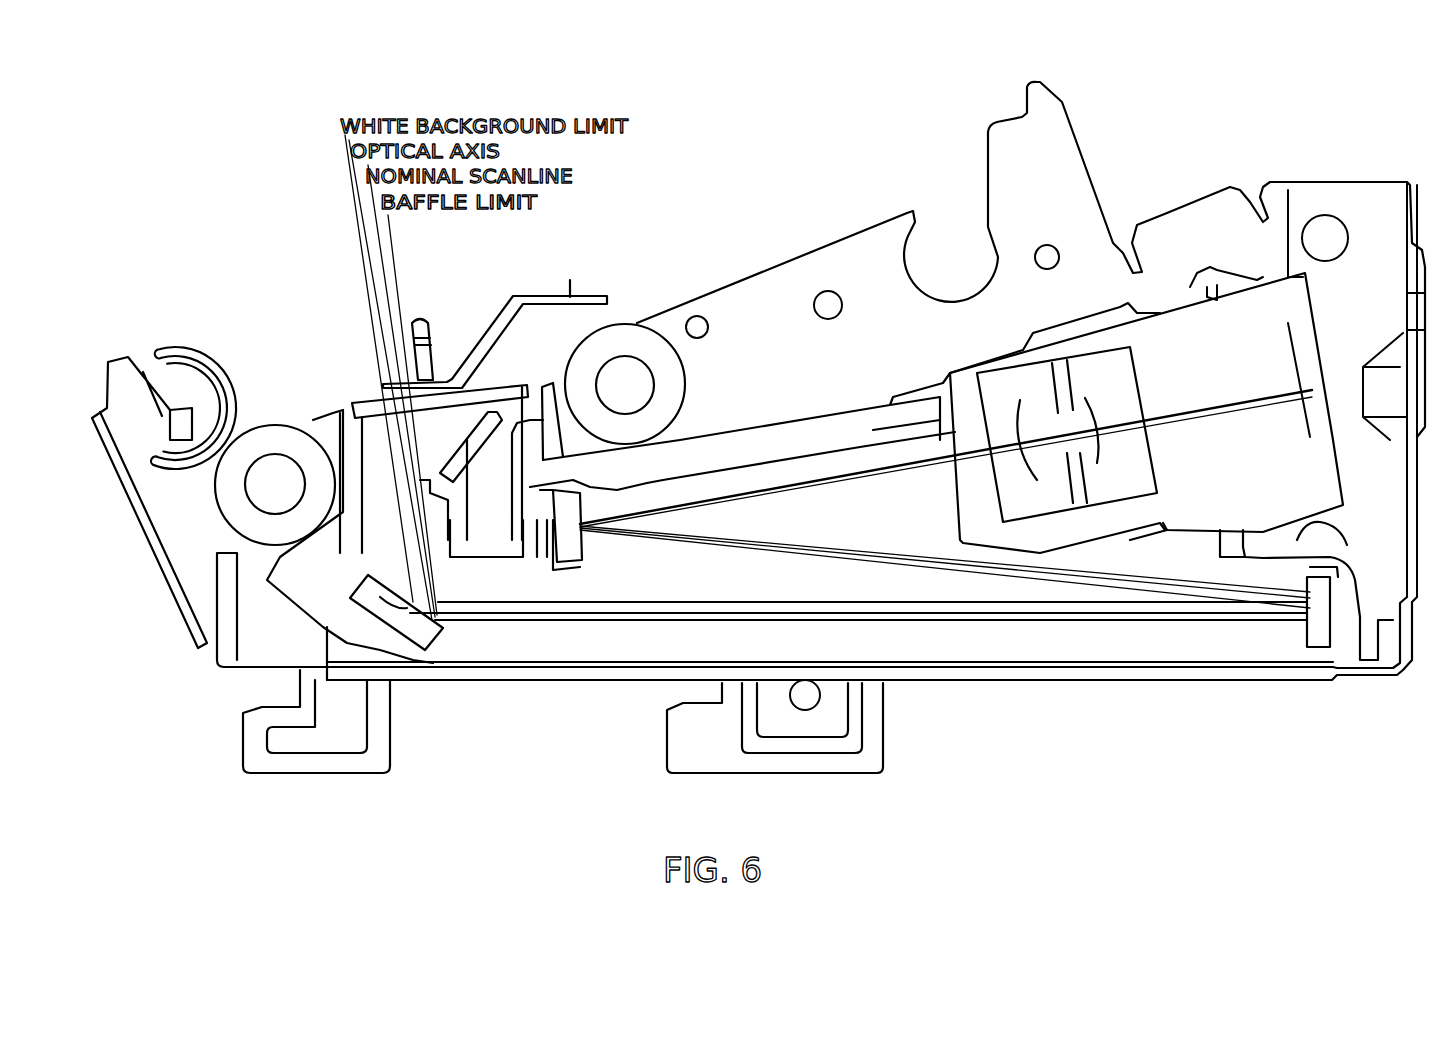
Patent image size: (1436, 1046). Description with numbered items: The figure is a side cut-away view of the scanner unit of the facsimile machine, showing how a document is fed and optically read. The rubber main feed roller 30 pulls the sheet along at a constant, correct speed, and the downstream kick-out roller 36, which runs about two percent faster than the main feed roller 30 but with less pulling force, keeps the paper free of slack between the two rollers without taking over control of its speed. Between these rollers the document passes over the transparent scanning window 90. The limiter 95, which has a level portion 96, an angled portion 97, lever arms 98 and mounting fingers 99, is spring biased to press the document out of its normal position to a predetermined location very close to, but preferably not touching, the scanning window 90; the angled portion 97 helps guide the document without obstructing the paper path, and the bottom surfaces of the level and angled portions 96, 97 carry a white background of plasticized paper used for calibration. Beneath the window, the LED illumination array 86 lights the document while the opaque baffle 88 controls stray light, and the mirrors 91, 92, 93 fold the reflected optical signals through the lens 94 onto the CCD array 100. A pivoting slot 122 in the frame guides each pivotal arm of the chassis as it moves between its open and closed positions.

The main feed roller 30 is at (627, 323).
The kick-out roller 36 is at (260, 424).
The LED illumination array 86 is at (472, 433).
The opaque baffle 88 is at (473, 400).
The transparent scanning window 90 is at (350, 395).
The mirror 91 is at (373, 603).
The mirror 92 is at (1307, 654).
The mirror 93 is at (578, 553).
The lens 94 is at (1046, 512).
The limiter 95 is at (482, 300).
The level portion 96 is at (408, 385).
The angled portion 97 is at (477, 340).
The lever arms 98 is at (570, 287).
The mounting fingers 99 is at (398, 333).
The CCD array 100 is at (1310, 443).
The pivoting slot 122 is at (168, 428).